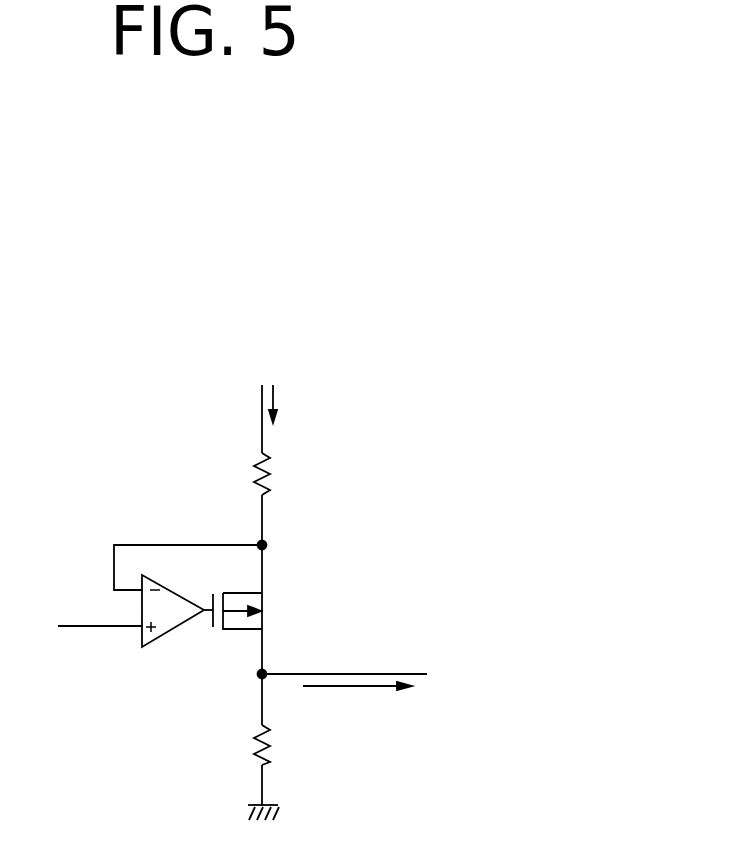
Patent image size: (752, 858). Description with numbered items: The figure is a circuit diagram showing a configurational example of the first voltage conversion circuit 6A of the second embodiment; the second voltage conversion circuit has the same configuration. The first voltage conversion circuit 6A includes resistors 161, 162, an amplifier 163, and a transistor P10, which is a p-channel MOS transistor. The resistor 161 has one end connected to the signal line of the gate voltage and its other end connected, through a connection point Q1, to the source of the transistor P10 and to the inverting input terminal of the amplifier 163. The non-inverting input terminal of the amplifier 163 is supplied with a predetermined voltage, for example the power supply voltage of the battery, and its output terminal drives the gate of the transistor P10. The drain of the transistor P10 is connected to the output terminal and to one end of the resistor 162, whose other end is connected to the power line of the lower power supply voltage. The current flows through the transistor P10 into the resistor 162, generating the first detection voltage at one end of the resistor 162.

The first voltage conversion circuit 6A is at (426, 348).
The resistor 161 is at (252, 478).
The resistor 162 is at (252, 756).
The amplifier 163 is at (157, 640).
The connection point Q1 is at (268, 545).
The transistor P10 is at (237, 630).